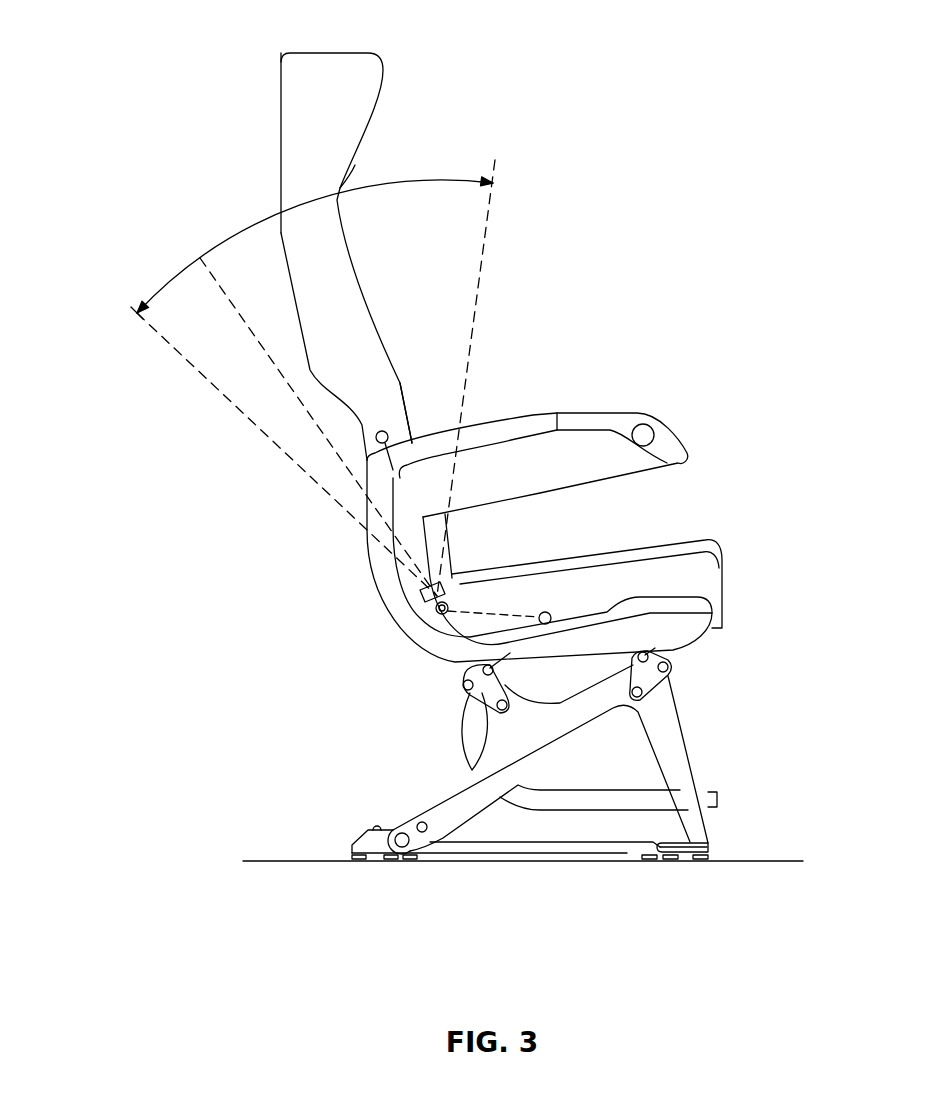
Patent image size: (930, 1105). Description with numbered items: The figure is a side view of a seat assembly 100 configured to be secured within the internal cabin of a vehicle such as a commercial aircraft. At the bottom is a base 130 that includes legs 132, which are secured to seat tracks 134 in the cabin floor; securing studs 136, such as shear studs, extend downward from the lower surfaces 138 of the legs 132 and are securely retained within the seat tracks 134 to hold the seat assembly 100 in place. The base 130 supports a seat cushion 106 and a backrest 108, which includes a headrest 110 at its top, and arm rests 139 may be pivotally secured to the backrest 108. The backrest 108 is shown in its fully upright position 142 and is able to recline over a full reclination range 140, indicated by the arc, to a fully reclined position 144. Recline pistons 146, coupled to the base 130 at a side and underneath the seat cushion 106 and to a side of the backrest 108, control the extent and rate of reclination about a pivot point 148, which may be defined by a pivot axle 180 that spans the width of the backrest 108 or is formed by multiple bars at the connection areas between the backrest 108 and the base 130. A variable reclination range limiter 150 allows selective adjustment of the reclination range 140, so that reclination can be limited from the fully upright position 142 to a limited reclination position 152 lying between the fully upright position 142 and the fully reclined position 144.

The seat assembly 100 is at (257, 50).
The seat cushion 106 is at (714, 540).
The backrest 108 is at (278, 192).
The headrest 110 is at (355, 165).
The base 130 is at (460, 775).
The legs 132 is at (352, 850).
The seat tracks 134 is at (430, 867).
The securing studs 136 is at (358, 866).
The lower surfaces 138 is at (368, 832).
The arm rests 139 is at (600, 413).
The reclination range 140 is at (166, 268).
The fully upright position 142 is at (422, 101).
The fully reclined position 144 is at (128, 321).
The recline pistons 146 is at (403, 508).
The pivot point 148 is at (438, 613).
The variable reclination range limiter 150 is at (428, 598).
The limited reclination position 152 is at (262, 350).
The pivot axle 180 is at (447, 606).